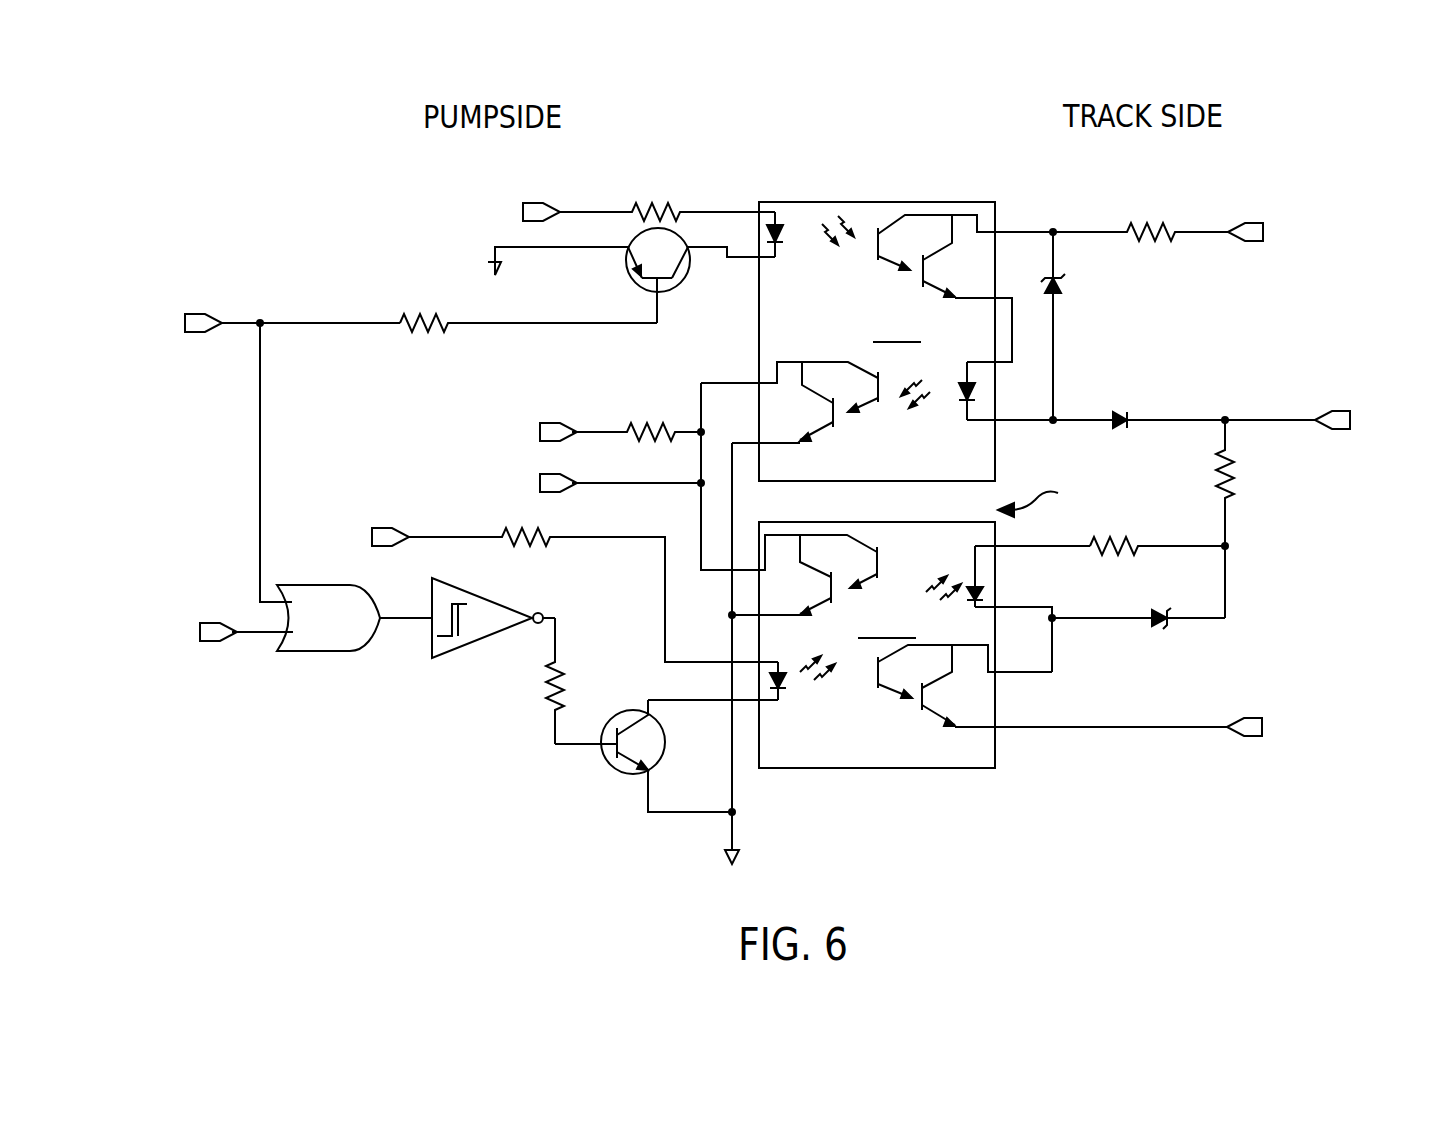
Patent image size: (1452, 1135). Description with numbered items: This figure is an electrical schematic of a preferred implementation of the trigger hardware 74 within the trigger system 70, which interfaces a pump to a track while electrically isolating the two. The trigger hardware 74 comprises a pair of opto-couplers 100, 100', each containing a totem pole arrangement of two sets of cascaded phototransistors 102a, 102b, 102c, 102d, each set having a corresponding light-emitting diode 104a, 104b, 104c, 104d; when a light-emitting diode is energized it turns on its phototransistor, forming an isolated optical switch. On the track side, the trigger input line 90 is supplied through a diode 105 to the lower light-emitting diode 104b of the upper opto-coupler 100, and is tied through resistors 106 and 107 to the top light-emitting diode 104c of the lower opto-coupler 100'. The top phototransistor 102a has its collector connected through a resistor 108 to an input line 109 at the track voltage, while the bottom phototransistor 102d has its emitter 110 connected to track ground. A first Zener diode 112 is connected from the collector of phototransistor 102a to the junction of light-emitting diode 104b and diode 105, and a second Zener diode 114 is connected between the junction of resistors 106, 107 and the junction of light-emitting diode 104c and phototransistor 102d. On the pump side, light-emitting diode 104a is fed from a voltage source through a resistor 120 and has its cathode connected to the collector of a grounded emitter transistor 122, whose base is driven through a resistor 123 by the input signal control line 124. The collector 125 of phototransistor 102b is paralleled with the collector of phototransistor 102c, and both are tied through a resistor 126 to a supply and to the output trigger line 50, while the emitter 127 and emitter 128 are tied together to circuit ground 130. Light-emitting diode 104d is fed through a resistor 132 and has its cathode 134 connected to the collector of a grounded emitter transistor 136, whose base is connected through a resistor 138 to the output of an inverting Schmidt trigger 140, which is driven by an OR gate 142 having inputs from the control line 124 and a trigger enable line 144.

The output trigger line 50 is at (607, 483).
The trigger system 70 is at (990, 858).
The trigger hardware 74 is at (1047, 496).
The trigger input line 90 is at (1325, 411).
The opto-coupler 100 is at (877, 341).
The opto-coupler 100' is at (877, 645).
The top phototransistor 102a is at (892, 222).
The bottom phototransistor 102b is at (822, 447).
The top phototransistor 102c is at (902, 512).
The bottom phototransistor 102d is at (880, 690).
The light-emitting diode 104a is at (778, 232).
The light-emitting diode 104b is at (975, 383).
The light-emitting diode 104c is at (983, 586).
The light-emitting diode 104d is at (787, 680).
The diode 105 is at (1118, 412).
The resistor 106 is at (1235, 470).
The resistor 107 is at (1118, 538).
The resistor 108 is at (1152, 222).
The input line 109 is at (1250, 220).
The emitter 110 is at (1100, 730).
The first Zener diode 112 is at (1068, 290).
The second Zener diode 114 is at (1166, 627).
The resistor 120 is at (670, 205).
The grounded emitter transistor 122 is at (634, 268).
The resistor 123 is at (426, 312).
The input signal control line 124 is at (206, 336).
The collector 125 is at (724, 383).
The resistor 126 is at (650, 420).
The emitter 127 is at (744, 443).
The emitter 128 is at (730, 614).
The circuit ground 130 is at (736, 815).
The resistor 132 is at (520, 530).
The cathode 134 is at (678, 702).
The grounded emitter transistor 136 is at (608, 770).
The resistor 138 is at (563, 685).
The inverting Schmidt trigger 140 is at (430, 637).
The OR gate 142 is at (298, 644).
The trigger enable line 144 is at (212, 645).